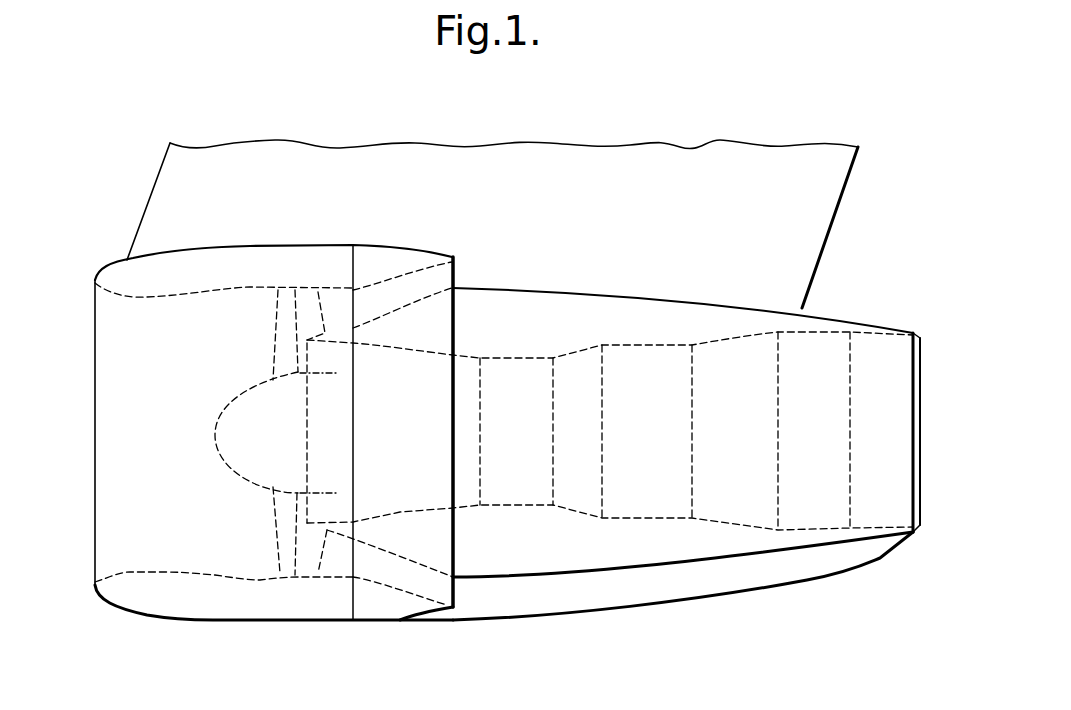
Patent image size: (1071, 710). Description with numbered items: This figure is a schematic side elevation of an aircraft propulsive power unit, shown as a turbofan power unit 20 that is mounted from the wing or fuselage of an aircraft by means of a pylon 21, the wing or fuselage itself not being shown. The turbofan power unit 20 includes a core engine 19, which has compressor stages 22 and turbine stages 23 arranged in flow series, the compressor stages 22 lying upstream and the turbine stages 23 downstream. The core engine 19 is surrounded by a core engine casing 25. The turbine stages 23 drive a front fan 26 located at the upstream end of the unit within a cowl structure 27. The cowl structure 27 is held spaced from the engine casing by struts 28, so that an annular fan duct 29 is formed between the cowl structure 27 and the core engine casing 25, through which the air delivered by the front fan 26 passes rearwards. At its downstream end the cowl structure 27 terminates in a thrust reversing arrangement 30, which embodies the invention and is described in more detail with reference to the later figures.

The core engine 19 is at (661, 522).
The turbofan power unit 20 is at (857, 296).
The pylon 21 is at (765, 165).
The compressor stages 22 is at (468, 363).
The turbine stages 23 is at (727, 350).
The core engine casing 25 is at (812, 540).
The front fan 26 is at (285, 333).
The cowl structure 27 is at (125, 280).
The struts 28 is at (335, 303).
The annular fan duct 29 is at (415, 273).
The thrust reversing arrangement 30 is at (373, 603).